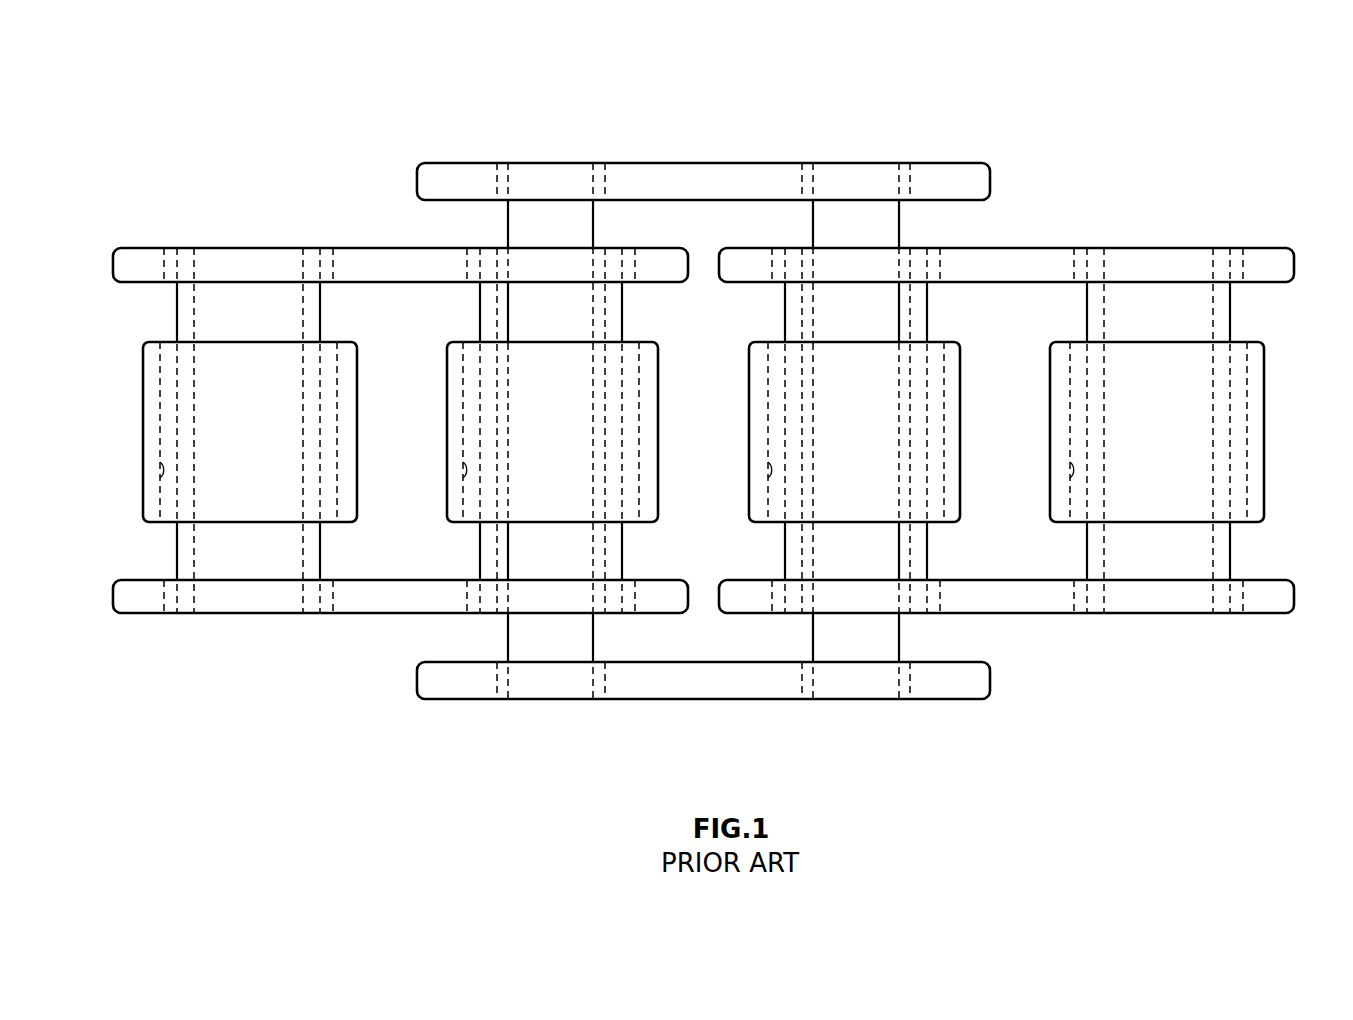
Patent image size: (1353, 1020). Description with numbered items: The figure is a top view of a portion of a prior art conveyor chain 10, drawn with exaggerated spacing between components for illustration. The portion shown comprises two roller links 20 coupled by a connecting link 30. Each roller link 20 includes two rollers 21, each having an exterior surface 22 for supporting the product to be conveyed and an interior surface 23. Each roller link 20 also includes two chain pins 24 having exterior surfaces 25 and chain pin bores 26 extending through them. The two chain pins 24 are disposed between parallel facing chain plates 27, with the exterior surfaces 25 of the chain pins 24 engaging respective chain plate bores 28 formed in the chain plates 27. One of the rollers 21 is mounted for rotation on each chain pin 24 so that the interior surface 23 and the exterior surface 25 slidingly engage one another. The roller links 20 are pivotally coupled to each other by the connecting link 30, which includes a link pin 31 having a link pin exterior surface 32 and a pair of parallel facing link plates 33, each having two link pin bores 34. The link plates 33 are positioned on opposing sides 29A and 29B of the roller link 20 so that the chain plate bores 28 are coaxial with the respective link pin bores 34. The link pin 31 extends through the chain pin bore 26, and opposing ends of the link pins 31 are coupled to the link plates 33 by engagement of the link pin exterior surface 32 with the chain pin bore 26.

The conveyor chain 10 is at (746, 97).
The roller link 20 is at (326, 664).
The roller 21 is at (157, 371).
The exterior surface 22 is at (233, 420).
The interior surface 23 is at (158, 476).
The chain pin 24 is at (314, 300).
The exterior surface 25 is at (231, 325).
The chain pin bore 26 is at (196, 246).
The chain plate 27 is at (136, 248).
The chain plate bore 28 is at (330, 246).
The opposing side 29A is at (260, 228).
The opposing side 29B is at (228, 634).
The connecting link 30 is at (636, 759).
The link pin 31 is at (508, 630).
The link pin exterior surface 32 is at (534, 237).
The link plate 33 is at (985, 163).
The link pin bore 34 is at (503, 163).